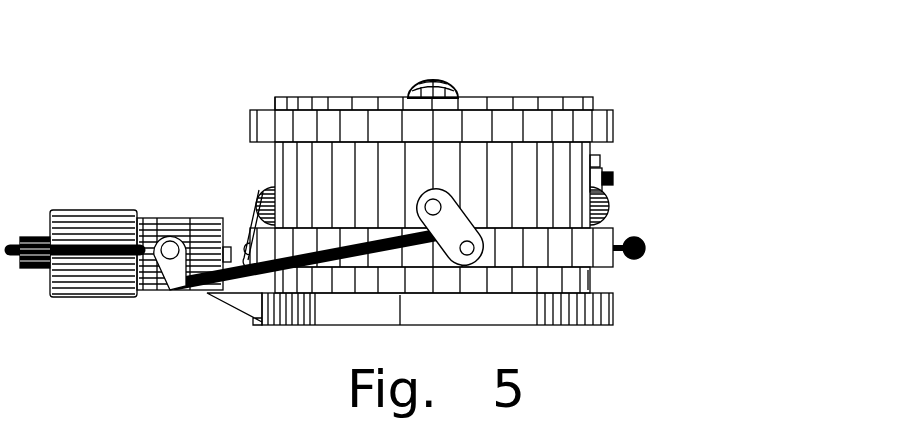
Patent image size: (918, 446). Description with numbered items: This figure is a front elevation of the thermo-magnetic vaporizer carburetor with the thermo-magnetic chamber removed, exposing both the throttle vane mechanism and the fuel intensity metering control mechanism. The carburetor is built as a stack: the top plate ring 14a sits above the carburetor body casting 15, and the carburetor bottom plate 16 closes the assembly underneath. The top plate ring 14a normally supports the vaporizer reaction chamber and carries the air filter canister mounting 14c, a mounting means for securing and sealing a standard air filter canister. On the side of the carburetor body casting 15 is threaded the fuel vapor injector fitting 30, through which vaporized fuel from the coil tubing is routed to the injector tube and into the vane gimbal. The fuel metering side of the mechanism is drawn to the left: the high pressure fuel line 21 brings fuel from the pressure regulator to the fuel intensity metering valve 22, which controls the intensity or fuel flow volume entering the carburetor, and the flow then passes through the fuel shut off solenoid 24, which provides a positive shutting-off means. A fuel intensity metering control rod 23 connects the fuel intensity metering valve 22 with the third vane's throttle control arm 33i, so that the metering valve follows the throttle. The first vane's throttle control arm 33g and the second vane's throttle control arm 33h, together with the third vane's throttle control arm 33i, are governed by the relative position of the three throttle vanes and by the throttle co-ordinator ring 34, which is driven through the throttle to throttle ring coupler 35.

The top plate ring 14a is at (565, 105).
The air filter canister mounting 14c is at (418, 88).
The carburetor body casting 15 is at (587, 280).
The carburetor bottom plate 16 is at (607, 305).
The high pressure fuel line 21 is at (17, 268).
The fuel intensity metering valve 22 is at (155, 218).
The fuel intensity metering control rod 23 is at (198, 282).
The fuel shut off solenoid 24 is at (132, 210).
The fuel vapor injector fitting 30 is at (593, 162).
The vane 1 throttle control arm 33g is at (254, 205).
The vane 2 throttle control arm 33h is at (607, 200).
The vane 3 throttle control arm 33i is at (428, 190).
The throttle co-ordinator ring 34 is at (613, 222).
The throttle to throttle ring coupler 35 is at (647, 243).